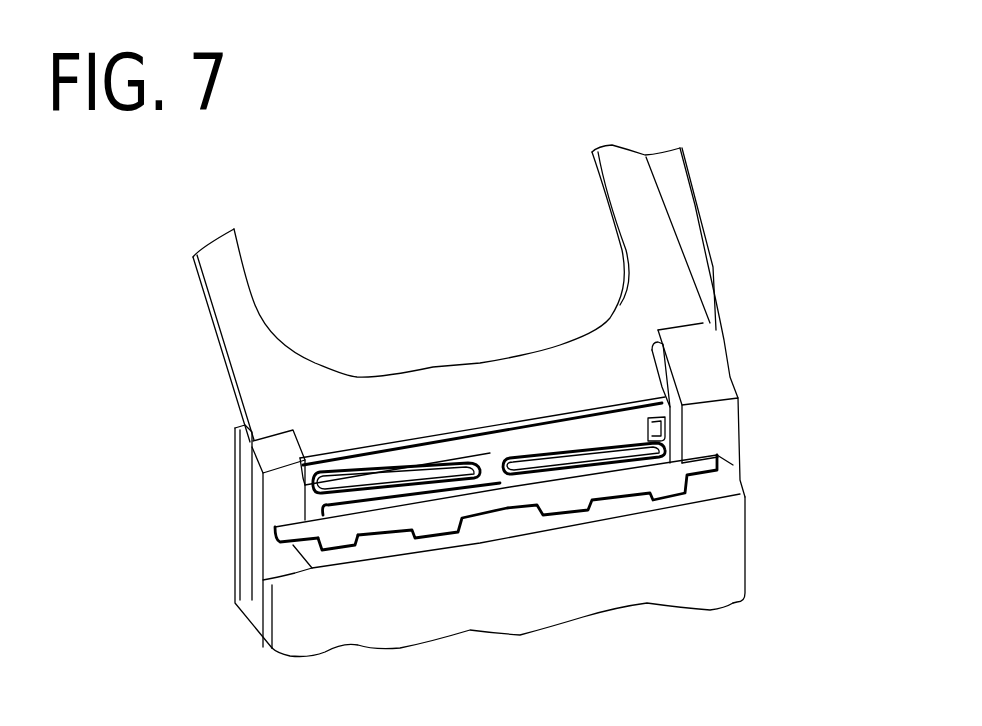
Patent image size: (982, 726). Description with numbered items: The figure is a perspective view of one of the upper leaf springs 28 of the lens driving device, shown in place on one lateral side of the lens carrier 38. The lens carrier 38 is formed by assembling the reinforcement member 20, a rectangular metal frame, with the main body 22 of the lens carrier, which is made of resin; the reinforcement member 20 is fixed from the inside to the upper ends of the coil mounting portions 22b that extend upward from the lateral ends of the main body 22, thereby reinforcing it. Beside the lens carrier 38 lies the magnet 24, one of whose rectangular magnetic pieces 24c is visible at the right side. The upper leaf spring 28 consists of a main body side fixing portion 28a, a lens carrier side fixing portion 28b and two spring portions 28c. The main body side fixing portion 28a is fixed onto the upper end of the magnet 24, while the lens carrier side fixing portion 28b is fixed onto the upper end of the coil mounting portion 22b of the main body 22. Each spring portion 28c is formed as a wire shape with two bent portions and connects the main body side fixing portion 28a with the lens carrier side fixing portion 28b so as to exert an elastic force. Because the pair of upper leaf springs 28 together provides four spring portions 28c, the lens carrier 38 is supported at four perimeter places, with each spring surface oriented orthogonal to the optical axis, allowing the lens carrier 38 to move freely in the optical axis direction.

The reinforcement member 20 is at (229, 323).
The lens carrier 38 is at (693, 187).
The main body of the lens carrier 22 is at (734, 371).
The coil mounting portion 22b is at (668, 431).
The magnet 24 is at (746, 541).
The magnetic piece 24c is at (638, 592).
The upper leaf spring 28 is at (497, 512).
The main body side fixing portion 28a is at (385, 520).
The lens carrier side fixing portion 28b is at (472, 435).
The spring portion 28c is at (385, 481).